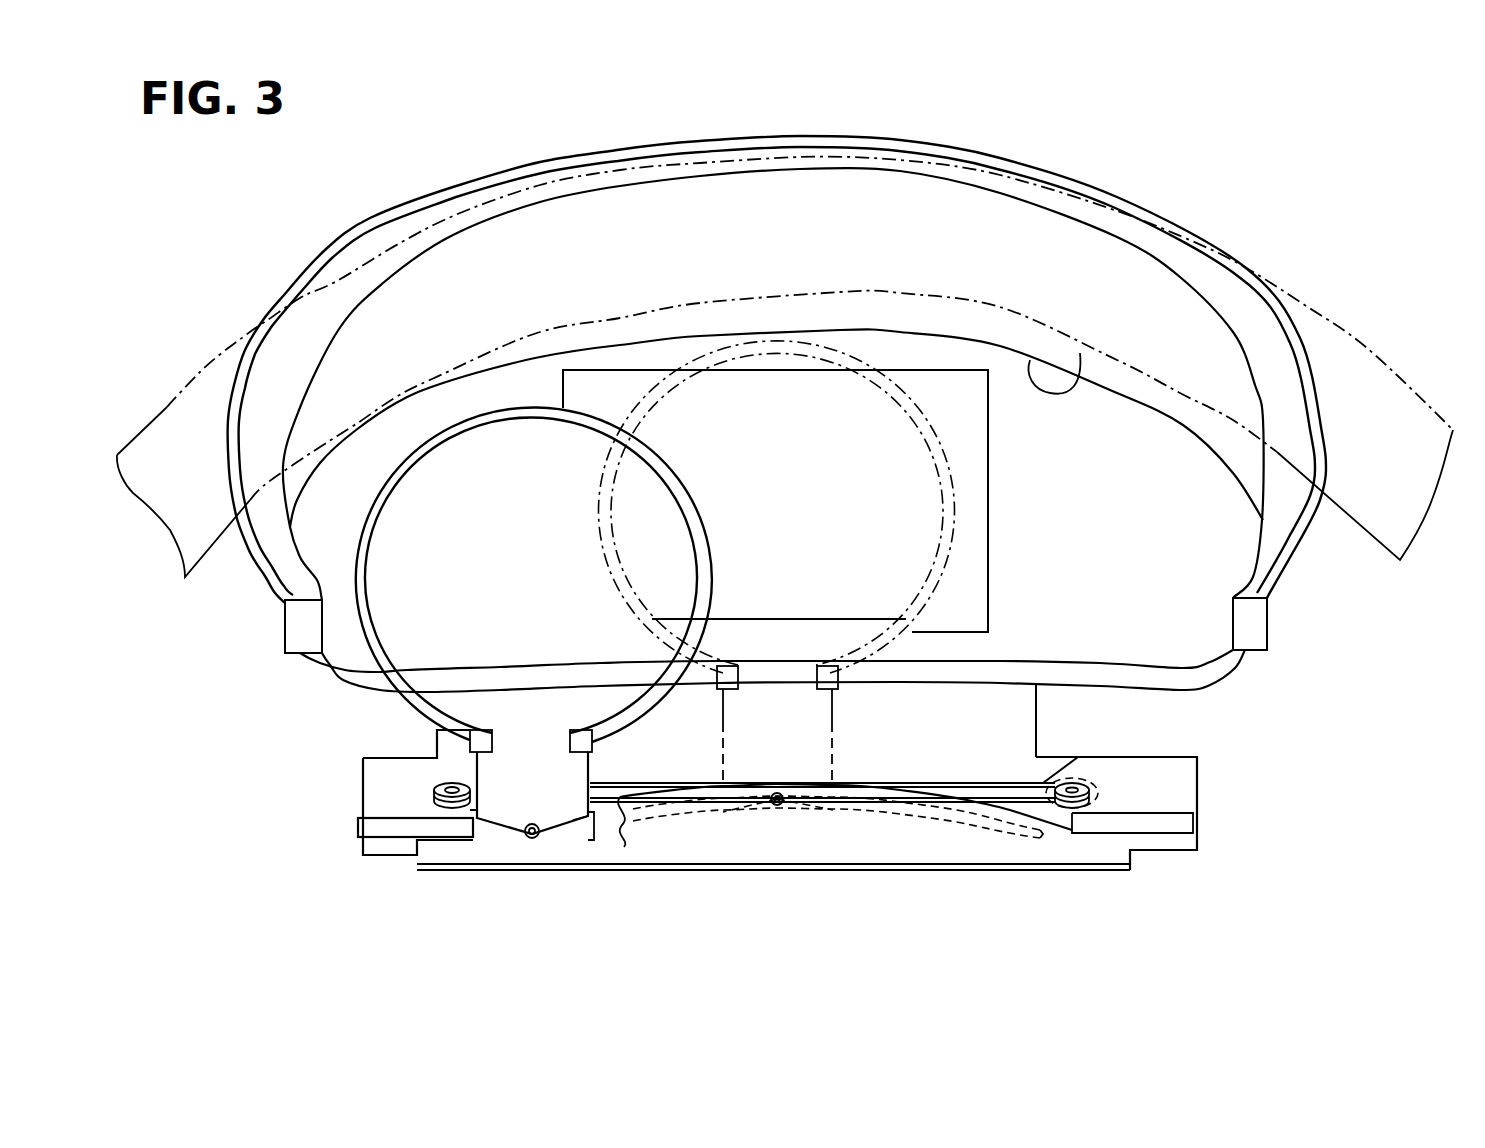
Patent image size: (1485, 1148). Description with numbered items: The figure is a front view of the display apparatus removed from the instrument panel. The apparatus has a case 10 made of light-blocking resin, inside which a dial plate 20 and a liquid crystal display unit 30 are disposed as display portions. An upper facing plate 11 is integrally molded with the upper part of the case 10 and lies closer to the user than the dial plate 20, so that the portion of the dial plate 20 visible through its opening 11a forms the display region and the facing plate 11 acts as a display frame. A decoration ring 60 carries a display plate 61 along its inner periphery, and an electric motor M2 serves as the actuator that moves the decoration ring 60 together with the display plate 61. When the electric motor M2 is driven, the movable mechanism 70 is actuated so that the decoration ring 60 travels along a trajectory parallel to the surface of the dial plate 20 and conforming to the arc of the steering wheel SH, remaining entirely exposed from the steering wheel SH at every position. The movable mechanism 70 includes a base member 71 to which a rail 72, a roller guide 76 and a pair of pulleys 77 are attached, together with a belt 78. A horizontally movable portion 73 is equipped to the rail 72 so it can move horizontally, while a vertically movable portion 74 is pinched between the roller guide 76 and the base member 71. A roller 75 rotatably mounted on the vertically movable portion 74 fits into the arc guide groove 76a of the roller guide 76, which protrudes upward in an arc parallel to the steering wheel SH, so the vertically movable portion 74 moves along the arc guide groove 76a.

The case 10 is at (1166, 222).
The upper facing plate 11 is at (1033, 187).
The opening 11a is at (1080, 353).
The dial plate 20 is at (1227, 560).
The liquid crystal display unit 30 is at (578, 383).
The decoration ring 60 is at (833, 340).
The display plate 61 is at (872, 418).
The steering wheel SH is at (1362, 352).
The movable mechanism 70 is at (1205, 814).
The base member 71 is at (380, 803).
The rail 72 is at (392, 830).
The horizontally movable portion 73 is at (562, 835).
The vertically movable portion 74 is at (573, 819).
The roller 75 is at (532, 839).
The roller guide 76 is at (977, 848).
The arc guide groove 76a is at (873, 808).
The pulleys 77 is at (440, 787).
The belt 78 is at (1078, 757).
The electric motor M2 is at (1100, 783).